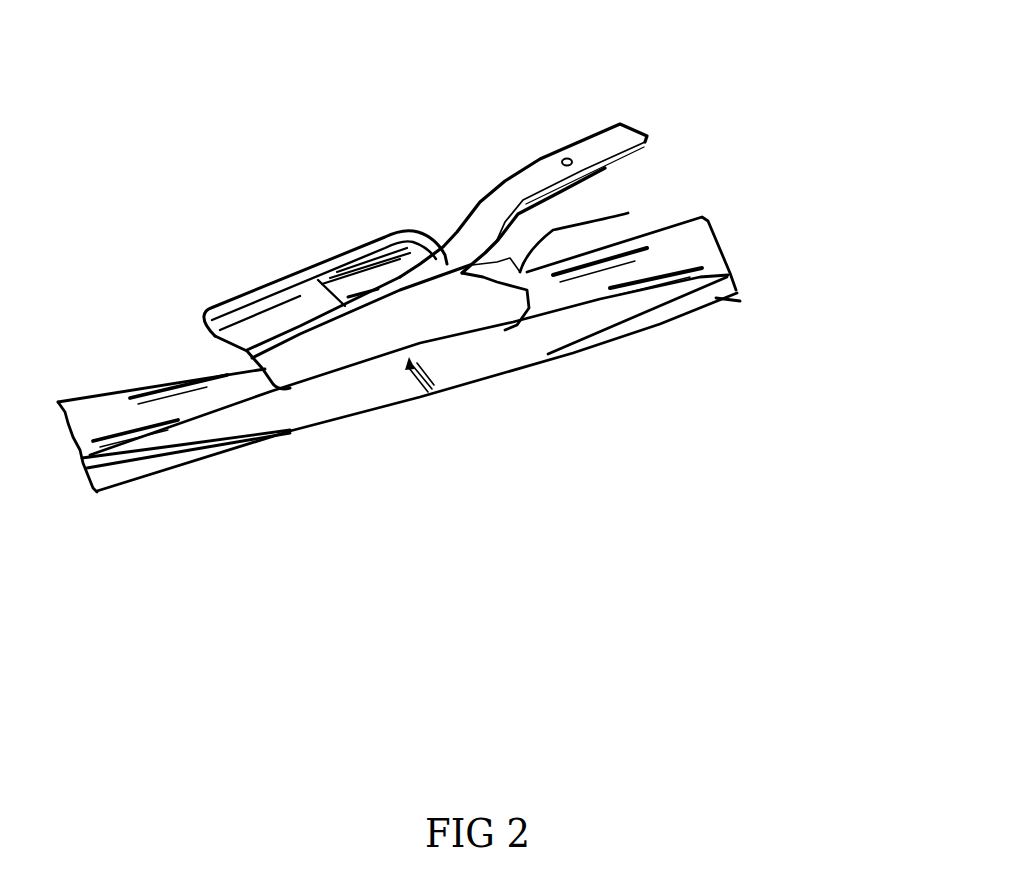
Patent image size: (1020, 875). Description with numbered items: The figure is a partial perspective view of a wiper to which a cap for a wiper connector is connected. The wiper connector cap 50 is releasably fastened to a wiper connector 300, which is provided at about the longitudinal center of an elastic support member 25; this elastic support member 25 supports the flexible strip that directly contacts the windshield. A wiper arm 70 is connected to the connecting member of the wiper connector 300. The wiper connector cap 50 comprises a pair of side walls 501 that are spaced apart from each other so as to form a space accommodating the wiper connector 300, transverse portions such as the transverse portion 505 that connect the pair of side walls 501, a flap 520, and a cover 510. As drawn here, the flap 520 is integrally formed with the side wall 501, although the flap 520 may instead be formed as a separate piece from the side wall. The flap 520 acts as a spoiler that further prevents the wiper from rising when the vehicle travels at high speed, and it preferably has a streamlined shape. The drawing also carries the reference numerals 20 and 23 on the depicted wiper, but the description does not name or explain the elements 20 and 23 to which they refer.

The wiper blade 20 is at (723, 353).
The spine rail 23 is at (720, 297).
The elastic support member 25 is at (707, 253).
The cap for wiper connector 50 is at (262, 245).
The wiper arm 70 is at (623, 140).
The wiper connector 300 is at (398, 232).
The side wall 501 is at (343, 347).
The transverse portion 505 is at (628, 213).
The cover 510 is at (243, 327).
The flap 520 is at (380, 397).